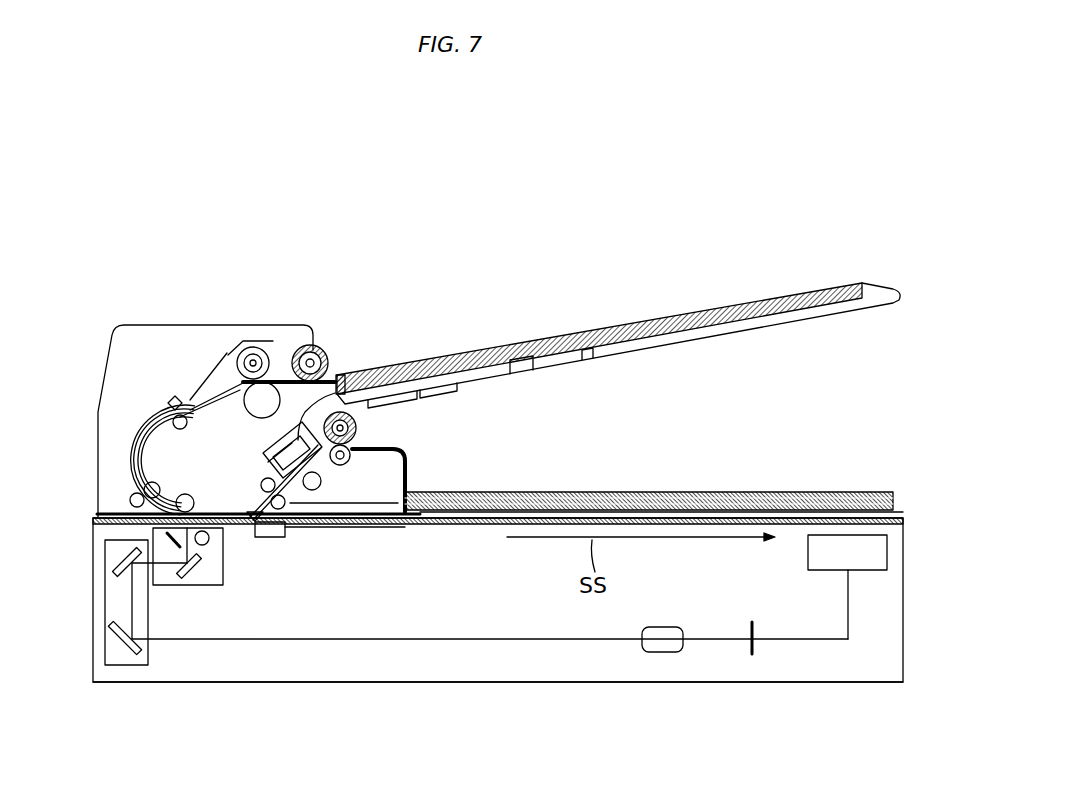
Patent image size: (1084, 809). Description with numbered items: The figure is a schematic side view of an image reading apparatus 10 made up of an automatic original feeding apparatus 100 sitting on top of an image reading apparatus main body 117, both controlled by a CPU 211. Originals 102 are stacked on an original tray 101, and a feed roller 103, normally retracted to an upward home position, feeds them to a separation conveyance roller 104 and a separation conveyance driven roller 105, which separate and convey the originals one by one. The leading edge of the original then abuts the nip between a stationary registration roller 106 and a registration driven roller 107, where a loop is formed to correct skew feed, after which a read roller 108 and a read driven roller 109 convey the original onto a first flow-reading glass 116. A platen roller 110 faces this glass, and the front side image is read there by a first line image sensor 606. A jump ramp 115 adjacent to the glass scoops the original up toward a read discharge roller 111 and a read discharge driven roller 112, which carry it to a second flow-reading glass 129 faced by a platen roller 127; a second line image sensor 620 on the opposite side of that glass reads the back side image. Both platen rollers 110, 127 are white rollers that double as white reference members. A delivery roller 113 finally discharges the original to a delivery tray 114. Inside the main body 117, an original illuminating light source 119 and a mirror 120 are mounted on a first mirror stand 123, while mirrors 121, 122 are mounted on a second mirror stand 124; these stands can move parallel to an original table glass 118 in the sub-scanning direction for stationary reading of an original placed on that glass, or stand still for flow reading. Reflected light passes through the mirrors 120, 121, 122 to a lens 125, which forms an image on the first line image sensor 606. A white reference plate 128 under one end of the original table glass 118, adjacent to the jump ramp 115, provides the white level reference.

The image reading apparatus 10 is at (849, 258).
The automatic original feeding apparatus 100 is at (381, 258).
The original tray 101 is at (771, 328).
The original 102 is at (633, 322).
The feed roller 103 is at (312, 345).
The separation conveyance roller 104 is at (250, 346).
The separation conveyance driven roller 105 is at (264, 346).
The registration roller 106 is at (167, 401).
The registration driven roller 107 is at (176, 398).
The read roller 108 is at (158, 483).
The read driven roller 109 is at (130, 497).
The platen roller 110 is at (194, 500).
The read discharge roller 111 is at (263, 478).
The read discharge driven roller 112 is at (310, 508).
The delivery roller 113 is at (357, 433).
The delivery tray 114 is at (592, 491).
The jump ramp 115 is at (298, 533).
The first flow-reading glass 116 is at (252, 537).
The image reading apparatus main body 117 is at (480, 683).
The original table glass 118 is at (440, 525).
The original illuminating light source 119 is at (214, 565).
The mirror 120 is at (195, 586).
The mirror 121 is at (110, 558).
The mirror 122 is at (108, 635).
The first mirror stand 123 is at (102, 540).
The second mirror stand 124 is at (122, 666).
The lens 125 is at (665, 627).
The platen roller 127 is at (321, 483).
The white reference plate 128 is at (292, 530).
The second flow-reading glass 129 is at (407, 452).
The CPU 211 is at (846, 535).
The first line image sensor 606 is at (760, 630).
The second line image sensor 620 is at (341, 374).